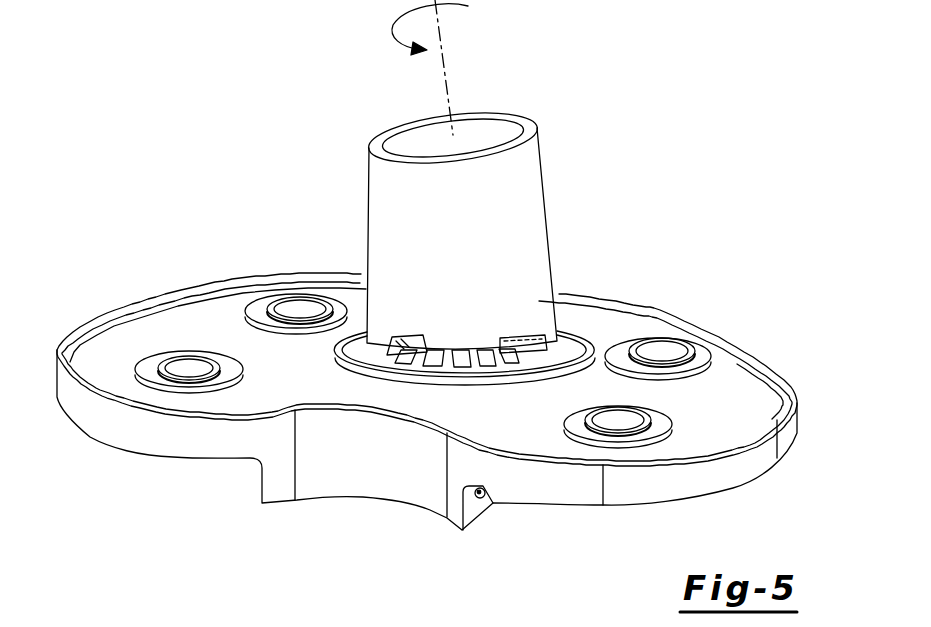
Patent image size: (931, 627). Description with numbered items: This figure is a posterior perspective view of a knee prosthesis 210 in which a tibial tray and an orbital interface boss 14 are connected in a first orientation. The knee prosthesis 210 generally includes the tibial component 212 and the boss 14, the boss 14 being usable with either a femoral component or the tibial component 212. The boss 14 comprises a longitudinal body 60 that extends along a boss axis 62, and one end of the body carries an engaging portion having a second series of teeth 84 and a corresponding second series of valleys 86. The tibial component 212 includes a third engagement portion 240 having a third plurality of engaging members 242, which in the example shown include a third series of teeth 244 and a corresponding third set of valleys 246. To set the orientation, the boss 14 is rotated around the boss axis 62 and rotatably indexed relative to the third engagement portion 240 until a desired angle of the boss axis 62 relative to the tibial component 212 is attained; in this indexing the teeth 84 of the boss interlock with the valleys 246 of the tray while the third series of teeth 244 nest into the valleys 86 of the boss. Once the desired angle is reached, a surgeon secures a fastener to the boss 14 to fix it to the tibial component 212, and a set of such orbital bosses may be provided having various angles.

The boss 14 is at (388, 188).
The longitudinal body 60 is at (463, 227).
The boss axis 62 is at (445, 60).
The second series of teeth 84 is at (354, 380).
The second series of valleys 86 is at (427, 343).
The knee prosthesis 210 is at (443, 342).
The tibial component 212 is at (727, 397).
The third engagement portion 240 is at (441, 400).
The third plurality of engaging members 242 is at (525, 357).
The third series of teeth 244 is at (430, 356).
The third set of valleys 246 is at (445, 364).